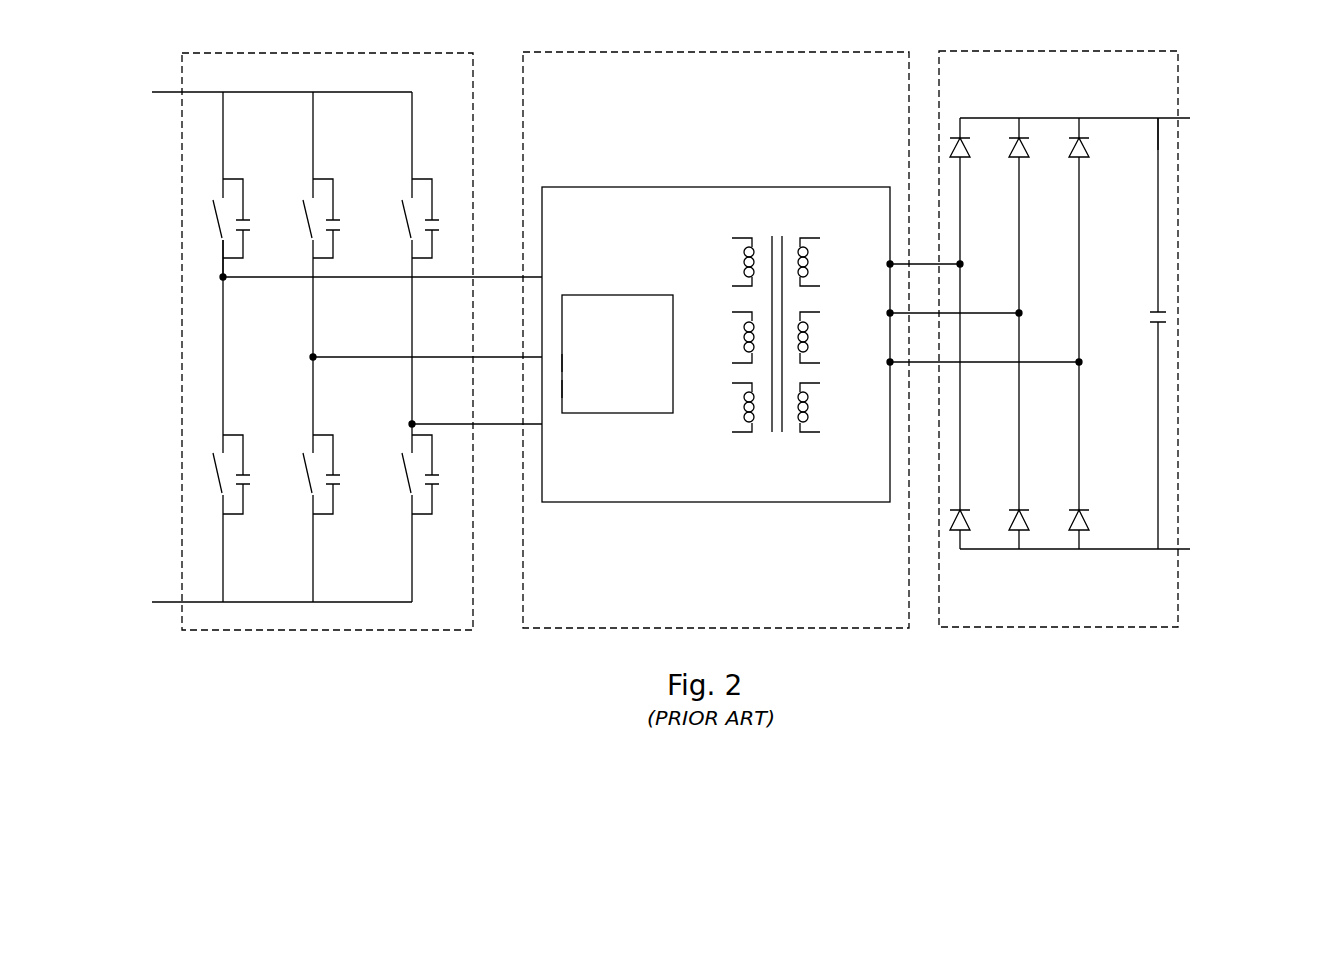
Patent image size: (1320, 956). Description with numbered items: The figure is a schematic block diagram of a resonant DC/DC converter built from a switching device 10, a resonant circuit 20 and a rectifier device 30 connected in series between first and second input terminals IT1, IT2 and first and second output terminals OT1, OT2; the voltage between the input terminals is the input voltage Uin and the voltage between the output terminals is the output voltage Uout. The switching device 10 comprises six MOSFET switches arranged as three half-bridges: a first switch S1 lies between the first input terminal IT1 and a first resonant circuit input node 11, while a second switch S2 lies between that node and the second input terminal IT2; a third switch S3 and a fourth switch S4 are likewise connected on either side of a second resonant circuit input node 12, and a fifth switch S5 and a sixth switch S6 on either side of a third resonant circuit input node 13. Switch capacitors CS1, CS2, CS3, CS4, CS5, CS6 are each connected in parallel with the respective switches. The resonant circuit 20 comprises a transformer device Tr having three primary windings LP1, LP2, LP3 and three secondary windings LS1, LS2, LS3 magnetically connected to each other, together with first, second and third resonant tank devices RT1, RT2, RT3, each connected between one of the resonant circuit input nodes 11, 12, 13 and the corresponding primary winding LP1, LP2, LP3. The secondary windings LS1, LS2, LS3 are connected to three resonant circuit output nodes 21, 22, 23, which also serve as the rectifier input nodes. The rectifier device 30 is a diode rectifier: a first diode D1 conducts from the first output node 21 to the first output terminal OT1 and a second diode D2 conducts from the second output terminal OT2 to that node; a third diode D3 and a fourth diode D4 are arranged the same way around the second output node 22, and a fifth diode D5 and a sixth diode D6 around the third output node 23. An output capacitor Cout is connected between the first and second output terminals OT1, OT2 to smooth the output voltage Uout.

The switching device 10 is at (233, 620).
The resonant circuit 20 is at (543, 610).
The rectifier device 30 is at (983, 615).
The first resonant circuit input node 11 is at (381, 267).
The second resonant circuit input node 12 is at (426, 346).
The third resonant circuit input node 13 is at (475, 414).
The first resonant circuit output node 21 is at (925, 254).
The second resonant circuit output node 22 is at (954, 303).
The third resonant circuit output node 23 is at (984, 352).
The transformer device Tr is at (713, 198).
The first switch S1 is at (204, 219).
The second switch S2 is at (204, 474).
The third switch S3 is at (295, 219).
The fourth switch S4 is at (295, 473).
The fifth switch S5 is at (394, 219).
The sixth switch S6 is at (394, 473).
The switch capacitor CS1 is at (251, 218).
The switch capacitor CS2 is at (252, 474).
The switch capacitor CS3 is at (341, 218).
The switch capacitor CS4 is at (341, 474).
The switch capacitor CS5 is at (441, 218).
The switch capacitor CS6 is at (441, 474).
The first primary winding LP1 is at (724, 262).
The second primary winding LP2 is at (724, 337).
The third primary winding LP3 is at (724, 407).
The first secondary winding LS1 is at (827, 262).
The second secondary winding LS2 is at (827, 337).
The third secondary winding LS3 is at (827, 407).
The first resonant tank device RT1 is at (617, 354).
The second resonant tank device RT2 is at (596, 359).
The third resonant tank device RT3 is at (596, 385).
The first diode D1 is at (973, 162).
The second diode D2 is at (970, 508).
The third diode D3 is at (1028, 162).
The fourth diode D4 is at (1029, 508).
The fifth diode D5 is at (1089, 162).
The sixth diode D6 is at (1092, 508).
The output capacitor Cout is at (1191, 333).
The first input terminal IT1 is at (263, 93).
The second input terminal IT2 is at (264, 602).
The first output terminal OT1 is at (1106, 119).
The second output terminal OT2 is at (1105, 559).
The input voltage Uin is at (170, 258).
The output voltage Uout is at (1215, 155).